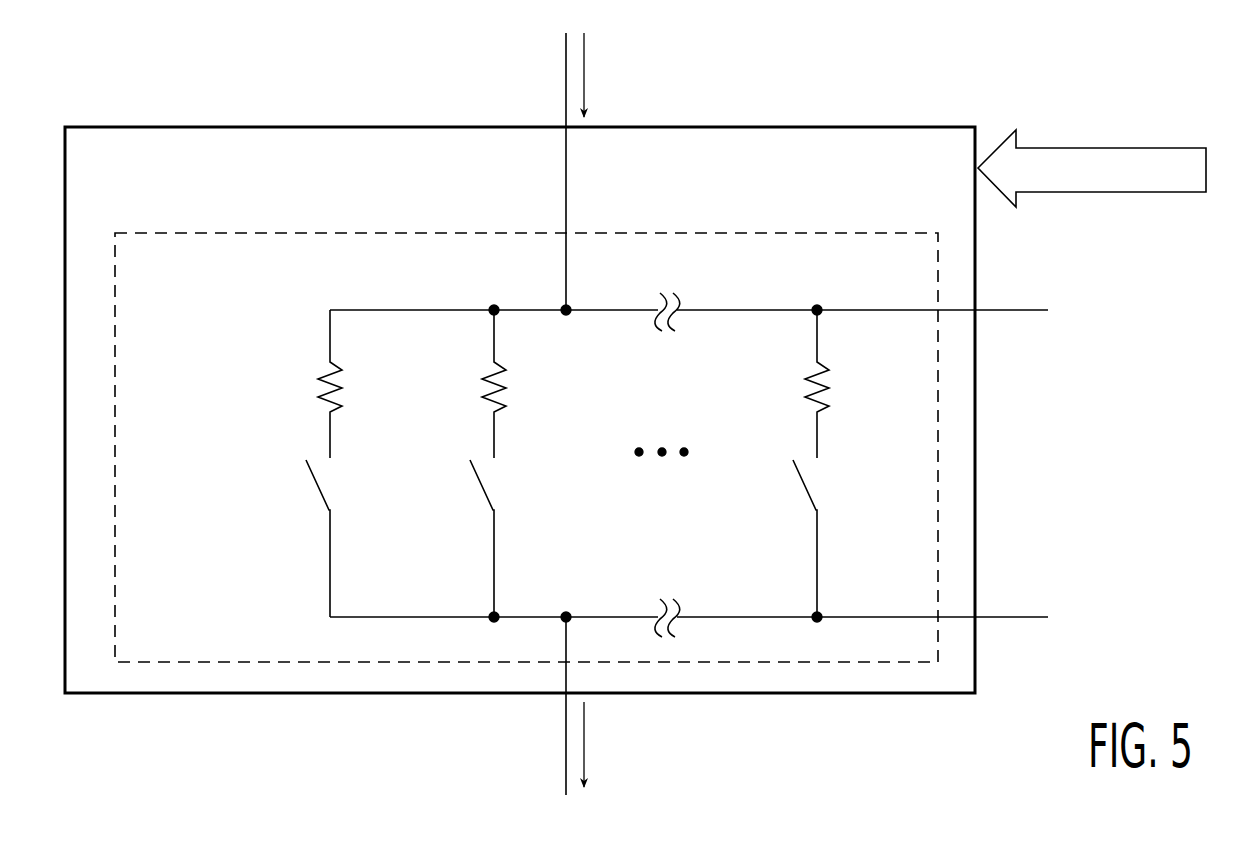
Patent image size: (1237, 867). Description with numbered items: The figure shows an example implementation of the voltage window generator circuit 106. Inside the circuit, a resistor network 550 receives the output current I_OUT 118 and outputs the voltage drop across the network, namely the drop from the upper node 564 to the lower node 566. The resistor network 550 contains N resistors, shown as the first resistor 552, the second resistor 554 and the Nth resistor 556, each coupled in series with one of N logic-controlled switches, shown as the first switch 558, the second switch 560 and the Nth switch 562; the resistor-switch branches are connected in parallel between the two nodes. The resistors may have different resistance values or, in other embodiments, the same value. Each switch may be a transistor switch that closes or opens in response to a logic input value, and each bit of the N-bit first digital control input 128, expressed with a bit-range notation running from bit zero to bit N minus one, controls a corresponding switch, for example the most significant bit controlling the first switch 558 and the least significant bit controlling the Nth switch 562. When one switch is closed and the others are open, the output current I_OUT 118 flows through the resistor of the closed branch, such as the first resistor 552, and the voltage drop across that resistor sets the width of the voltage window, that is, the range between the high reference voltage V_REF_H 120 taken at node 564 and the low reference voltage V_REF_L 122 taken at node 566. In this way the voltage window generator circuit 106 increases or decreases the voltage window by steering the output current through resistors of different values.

The voltage window generator circuit 106 is at (907, 127).
The output current I_OUT 118 is at (587, 44).
The V_REF_H 120 is at (1018, 308).
The V_REF_L 122 is at (1010, 617).
The first digital control input 128 is at (1155, 148).
The resistor network 550 is at (845, 233).
The resistor R1 552 is at (340, 387).
The resistor R2 554 is at (504, 387).
The resistor RN 556 is at (827, 387).
The switch SW1 558 is at (316, 510).
The switch SW2 560 is at (480, 510).
The switch SWN 562 is at (803, 510).
The node 564 is at (570, 307).
The node 566 is at (570, 612).